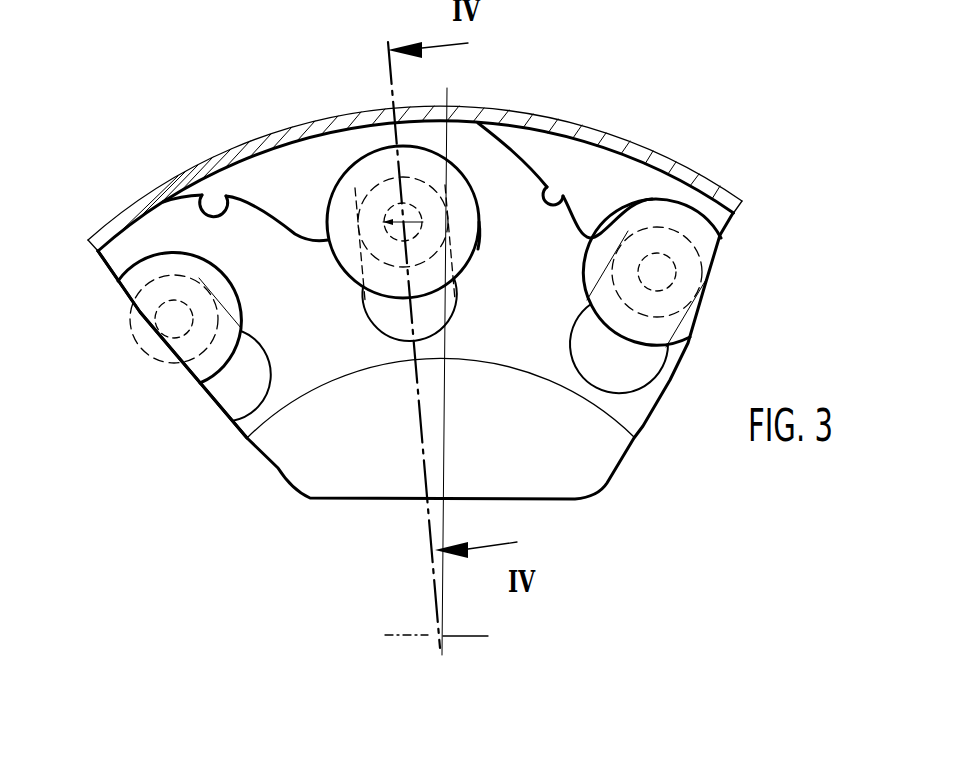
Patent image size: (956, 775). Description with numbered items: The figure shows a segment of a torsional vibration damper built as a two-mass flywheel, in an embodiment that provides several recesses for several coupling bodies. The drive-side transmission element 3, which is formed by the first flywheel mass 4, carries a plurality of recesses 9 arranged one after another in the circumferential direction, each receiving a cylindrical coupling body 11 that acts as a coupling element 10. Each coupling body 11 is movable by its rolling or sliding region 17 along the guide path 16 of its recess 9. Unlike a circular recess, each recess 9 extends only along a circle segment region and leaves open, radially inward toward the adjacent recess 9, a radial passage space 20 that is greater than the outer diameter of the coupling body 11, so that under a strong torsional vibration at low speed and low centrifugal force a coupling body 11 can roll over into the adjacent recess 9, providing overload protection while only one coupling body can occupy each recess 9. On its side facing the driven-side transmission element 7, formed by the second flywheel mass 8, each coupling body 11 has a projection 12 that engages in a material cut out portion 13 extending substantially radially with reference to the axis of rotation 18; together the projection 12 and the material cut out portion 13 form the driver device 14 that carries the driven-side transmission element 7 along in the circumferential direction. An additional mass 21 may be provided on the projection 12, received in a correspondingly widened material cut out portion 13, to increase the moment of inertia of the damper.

The drive-side transmission element 3 is at (250, 190).
The first flywheel mass 4 is at (642, 185).
The driven-side transmission element 7 is at (151, 349).
The second flywheel mass 8 is at (527, 176).
The recess 9 is at (199, 194).
The coupling element 10 is at (453, 190).
The coupling body 11 is at (467, 222).
The projection 12 is at (334, 177).
The material cut out portion 13 is at (402, 340).
The driver device 14 is at (442, 304).
The guide path 16 is at (559, 205).
The rolling or sliding region 17 is at (478, 249).
The axis of rotation 18 is at (438, 632).
The radial passage space 20 is at (292, 365).
The additional mass 21 is at (352, 275).